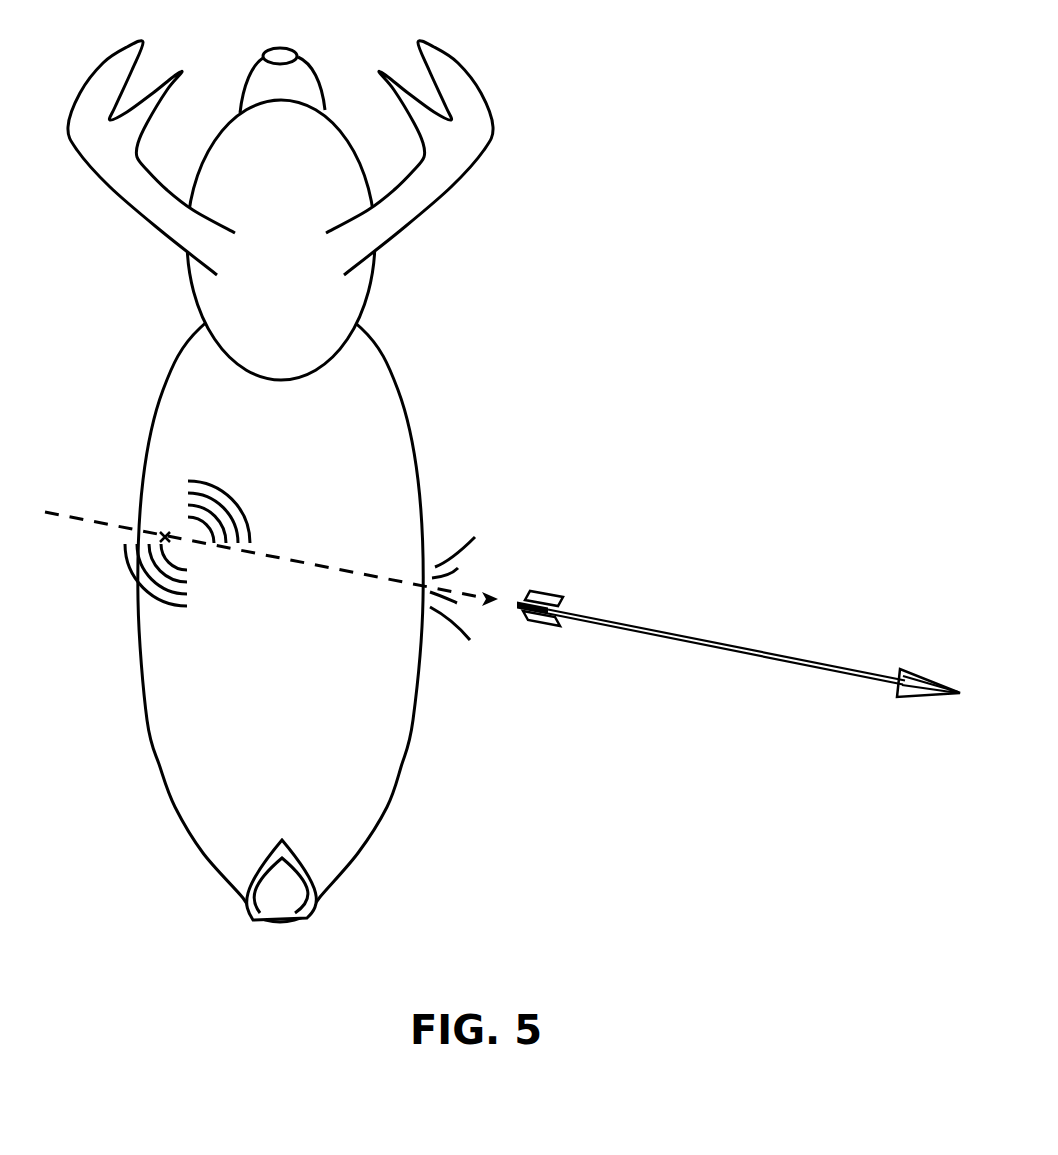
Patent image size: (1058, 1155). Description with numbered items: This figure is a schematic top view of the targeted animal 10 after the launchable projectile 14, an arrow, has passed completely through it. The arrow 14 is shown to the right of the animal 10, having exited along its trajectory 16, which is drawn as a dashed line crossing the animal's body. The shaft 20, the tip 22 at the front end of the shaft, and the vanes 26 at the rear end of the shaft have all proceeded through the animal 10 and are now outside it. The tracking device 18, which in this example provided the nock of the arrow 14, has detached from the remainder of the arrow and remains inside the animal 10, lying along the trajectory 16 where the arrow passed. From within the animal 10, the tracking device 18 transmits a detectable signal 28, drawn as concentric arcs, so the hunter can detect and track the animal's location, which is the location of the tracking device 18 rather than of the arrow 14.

The targeted animal 10 is at (466, 300).
The launchable projectile 14 is at (738, 632).
The trajectory 16 is at (77, 516).
The tracking device 18 is at (194, 548).
The shaft 20 is at (683, 642).
The tip 22 is at (905, 672).
The vanes 26 is at (535, 593).
The detectable signal 28 is at (237, 500).